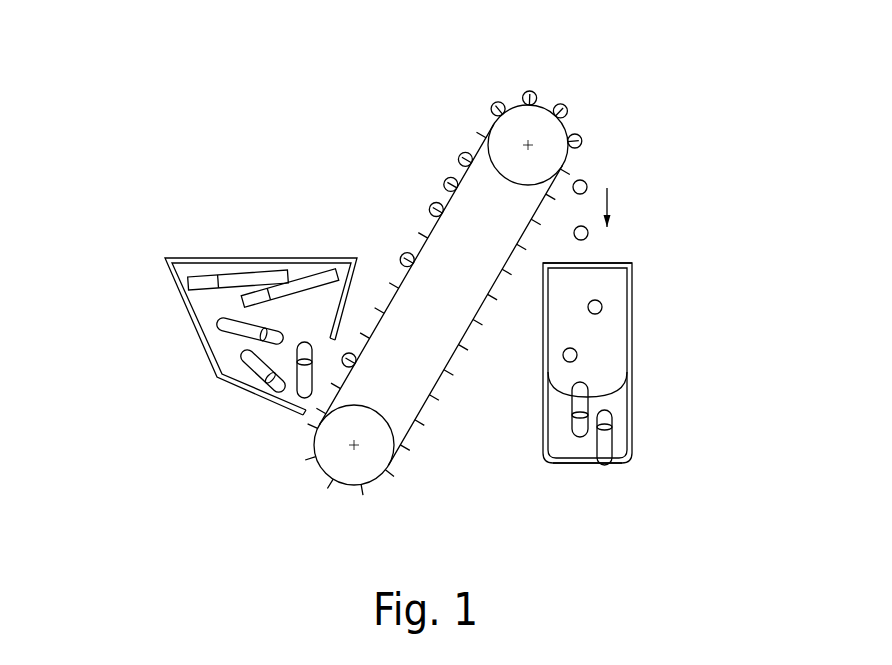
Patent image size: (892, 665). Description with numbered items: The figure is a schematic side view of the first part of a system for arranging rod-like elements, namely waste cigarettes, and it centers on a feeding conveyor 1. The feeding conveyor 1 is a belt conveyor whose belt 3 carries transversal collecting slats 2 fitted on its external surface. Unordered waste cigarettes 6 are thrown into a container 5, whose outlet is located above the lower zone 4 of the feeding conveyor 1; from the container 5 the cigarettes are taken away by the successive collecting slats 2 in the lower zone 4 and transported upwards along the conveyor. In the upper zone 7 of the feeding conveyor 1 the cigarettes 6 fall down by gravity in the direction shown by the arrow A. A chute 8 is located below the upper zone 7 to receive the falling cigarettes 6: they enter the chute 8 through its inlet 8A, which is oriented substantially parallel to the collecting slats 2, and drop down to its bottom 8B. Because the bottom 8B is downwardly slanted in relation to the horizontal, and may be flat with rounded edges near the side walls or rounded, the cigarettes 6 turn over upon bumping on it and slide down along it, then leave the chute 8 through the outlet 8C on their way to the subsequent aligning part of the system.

The feeding conveyor 1 is at (453, 108).
The collecting slats 2 is at (442, 182).
The belt 3 is at (428, 230).
The lower zone 4 is at (297, 440).
The container 5 is at (193, 342).
The cigarettes 6 is at (223, 278).
The upper zone 7 is at (603, 105).
The chute 8 is at (632, 328).
The inlet 8A is at (617, 258).
The chute bottom 8B is at (575, 445).
The outlet 8C is at (623, 473).
The arrow A is at (613, 193).